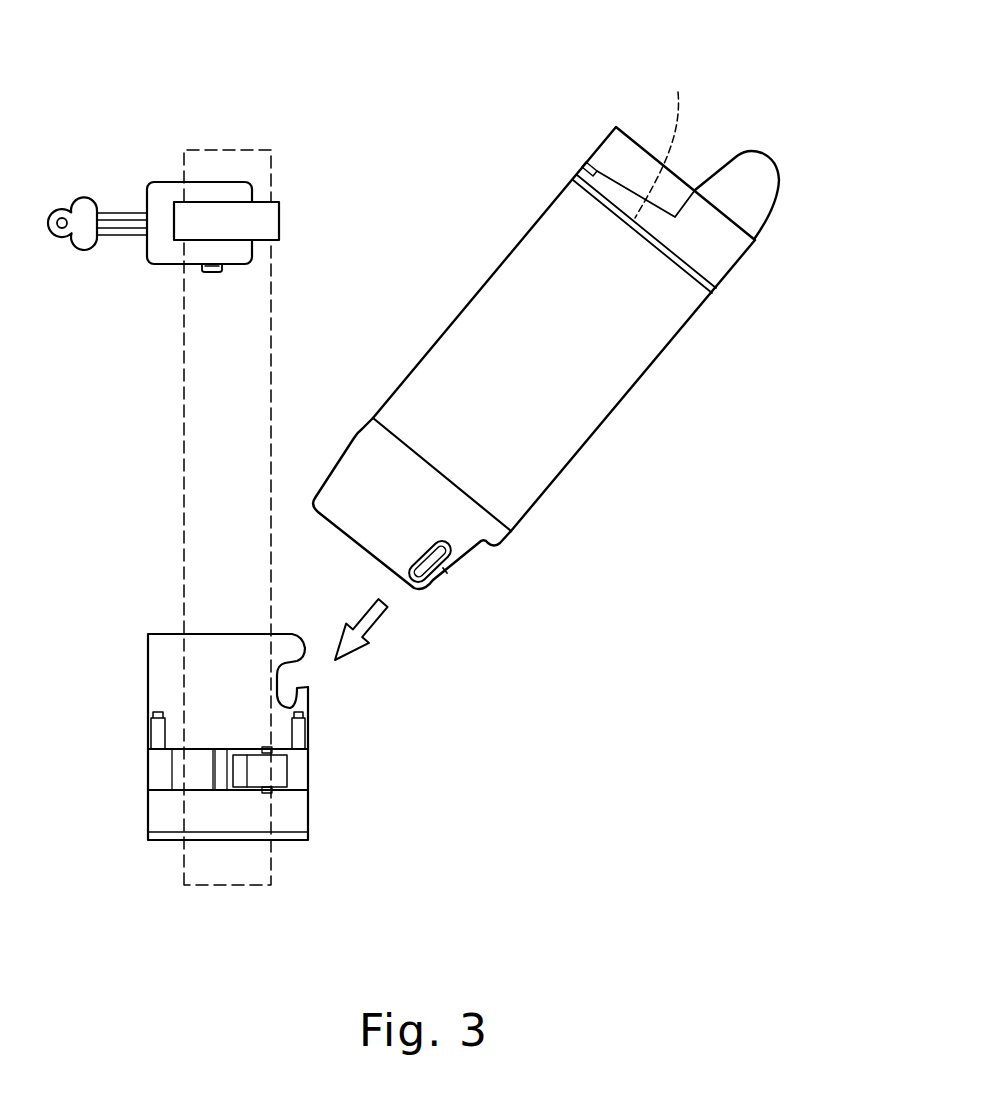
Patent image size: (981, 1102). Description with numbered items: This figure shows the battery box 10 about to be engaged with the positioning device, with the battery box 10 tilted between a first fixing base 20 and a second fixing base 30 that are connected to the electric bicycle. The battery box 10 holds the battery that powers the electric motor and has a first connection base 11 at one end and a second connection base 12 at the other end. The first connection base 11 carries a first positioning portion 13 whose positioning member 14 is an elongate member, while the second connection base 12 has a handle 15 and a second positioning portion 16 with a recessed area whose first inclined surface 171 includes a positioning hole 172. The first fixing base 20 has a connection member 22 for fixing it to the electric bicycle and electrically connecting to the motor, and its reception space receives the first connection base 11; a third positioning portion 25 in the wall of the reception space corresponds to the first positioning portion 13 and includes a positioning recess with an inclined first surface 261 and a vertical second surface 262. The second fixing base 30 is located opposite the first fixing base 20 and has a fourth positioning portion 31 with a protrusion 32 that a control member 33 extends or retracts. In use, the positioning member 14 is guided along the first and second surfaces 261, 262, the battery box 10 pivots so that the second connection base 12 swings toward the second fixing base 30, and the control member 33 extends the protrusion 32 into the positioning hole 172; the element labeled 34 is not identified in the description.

The battery box 10 is at (585, 428).
The first connection base 11 is at (347, 475).
The second connection base 12 is at (727, 250).
The first positioning portion 13 is at (445, 571).
The positioning member 14 is at (428, 573).
The handle 15 is at (753, 170).
The second positioning portion 16 is at (631, 155).
The first inclined surface 171 is at (622, 182).
The positioning hole 172 is at (667, 141).
The first fixing base 20 is at (165, 682).
The connection member 22 is at (163, 815).
The third positioning portion 25 is at (352, 700).
The first surface 261 is at (298, 661).
The second surface 262 is at (303, 687).
The second fixing base 30 is at (160, 196).
The fourth positioning portion 31 is at (194, 285).
The protrusion 32 is at (215, 273).
The control member 33 is at (85, 207).
The adapter bar 34 is at (272, 220).